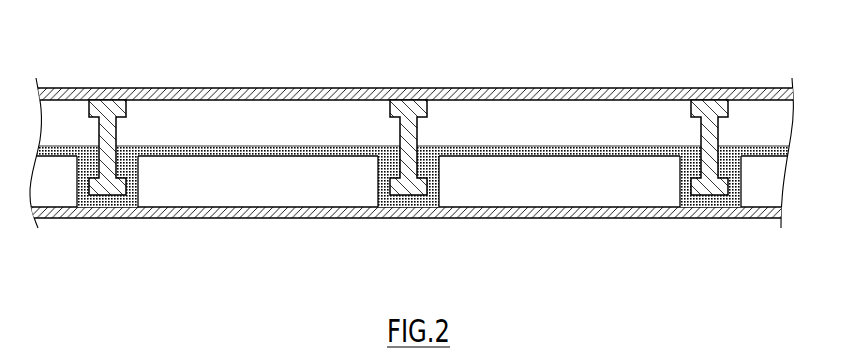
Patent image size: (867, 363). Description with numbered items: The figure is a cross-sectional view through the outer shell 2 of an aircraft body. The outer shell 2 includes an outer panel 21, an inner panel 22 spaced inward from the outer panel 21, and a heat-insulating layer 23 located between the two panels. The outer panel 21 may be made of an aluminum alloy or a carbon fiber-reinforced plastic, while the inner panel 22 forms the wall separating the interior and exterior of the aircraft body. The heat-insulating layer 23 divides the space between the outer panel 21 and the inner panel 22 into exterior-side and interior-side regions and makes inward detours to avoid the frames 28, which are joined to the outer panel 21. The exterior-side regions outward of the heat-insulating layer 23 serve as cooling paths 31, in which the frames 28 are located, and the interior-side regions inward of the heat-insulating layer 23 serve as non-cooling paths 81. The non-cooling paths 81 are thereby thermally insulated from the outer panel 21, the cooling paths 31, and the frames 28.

The outer shell 2 is at (96, 63).
The outer panel 21 is at (323, 88).
The inner panel 22 is at (342, 218).
The heat-insulating layer 23 is at (513, 146).
The frames 28 is at (118, 124).
The cooling paths 31 is at (263, 137).
The non-cooling paths 81 is at (263, 198).